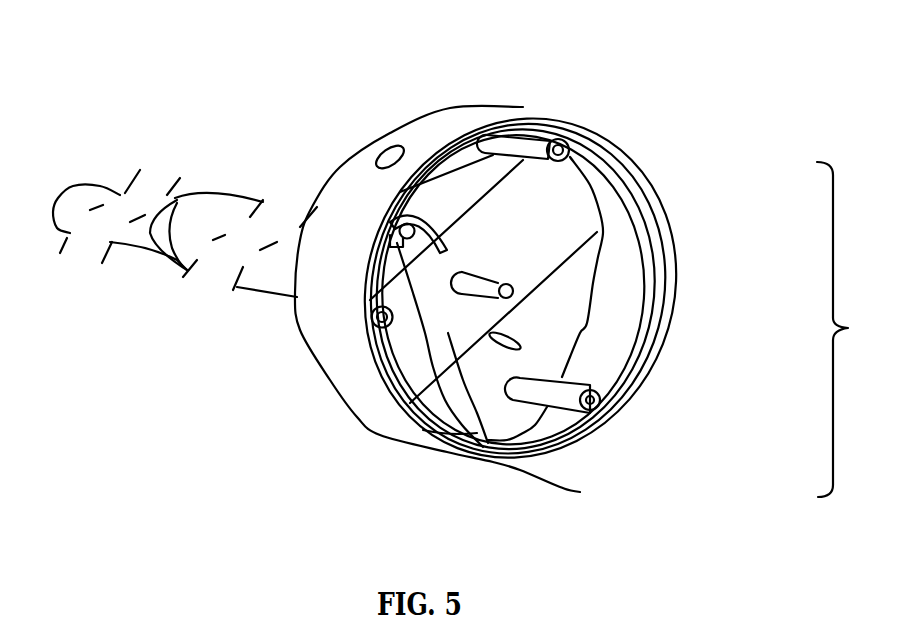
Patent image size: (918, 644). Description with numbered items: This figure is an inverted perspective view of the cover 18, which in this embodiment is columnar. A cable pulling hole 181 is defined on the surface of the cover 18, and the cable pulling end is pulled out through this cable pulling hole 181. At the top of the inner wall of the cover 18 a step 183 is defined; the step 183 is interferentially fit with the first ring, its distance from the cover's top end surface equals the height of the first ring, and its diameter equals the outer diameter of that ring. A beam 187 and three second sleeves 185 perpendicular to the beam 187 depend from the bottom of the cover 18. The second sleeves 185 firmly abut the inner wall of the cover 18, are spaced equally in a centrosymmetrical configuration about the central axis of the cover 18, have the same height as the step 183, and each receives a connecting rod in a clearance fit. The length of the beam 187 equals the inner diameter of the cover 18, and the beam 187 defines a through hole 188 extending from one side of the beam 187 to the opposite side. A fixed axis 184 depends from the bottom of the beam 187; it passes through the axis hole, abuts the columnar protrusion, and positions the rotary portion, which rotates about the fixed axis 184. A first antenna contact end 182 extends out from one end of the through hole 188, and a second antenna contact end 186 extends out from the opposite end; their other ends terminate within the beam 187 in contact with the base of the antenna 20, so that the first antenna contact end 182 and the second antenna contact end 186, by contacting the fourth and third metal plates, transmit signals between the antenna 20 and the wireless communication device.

The cover 18 is at (857, 329).
The antenna 20 is at (90, 203).
The cable pulling hole 181 is at (406, 153).
The first antenna contact end 182 is at (443, 230).
The step 183 is at (667, 257).
The fixed axis 184 is at (513, 292).
The second sleeves 185 is at (600, 397).
The second antenna contact end 186 is at (521, 348).
The beam 187 is at (477, 433).
The through hole 188 is at (580, 492).